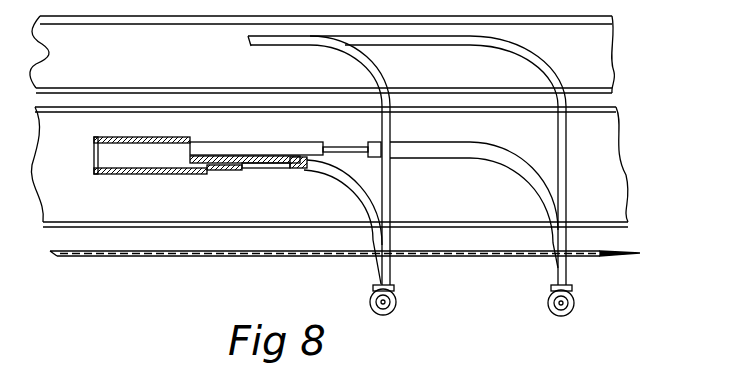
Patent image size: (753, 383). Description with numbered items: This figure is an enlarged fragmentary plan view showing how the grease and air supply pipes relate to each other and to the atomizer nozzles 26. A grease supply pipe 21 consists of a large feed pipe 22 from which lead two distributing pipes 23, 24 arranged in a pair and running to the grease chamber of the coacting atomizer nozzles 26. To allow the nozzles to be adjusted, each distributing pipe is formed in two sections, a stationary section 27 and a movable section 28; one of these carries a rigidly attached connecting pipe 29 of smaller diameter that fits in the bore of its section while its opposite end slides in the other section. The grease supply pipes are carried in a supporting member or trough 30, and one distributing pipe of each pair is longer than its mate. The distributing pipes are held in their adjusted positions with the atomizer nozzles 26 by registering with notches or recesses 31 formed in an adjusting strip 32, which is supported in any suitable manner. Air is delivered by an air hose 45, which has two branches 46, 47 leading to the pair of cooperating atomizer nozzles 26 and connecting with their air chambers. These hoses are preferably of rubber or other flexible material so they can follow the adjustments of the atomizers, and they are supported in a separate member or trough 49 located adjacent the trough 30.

The grease supply pipe 21 is at (95, 175).
The large feed pipe 22 is at (157, 165).
The distributing pipe 23 is at (238, 171).
The distributing pipe 24 is at (268, 142).
The atomizer nozzle 26 is at (396, 306).
The stationary section 27 is at (320, 142).
The movable section 28 is at (342, 184).
The connecting pipe 29 is at (258, 168).
The trough 30 is at (610, 196).
The notches 31 is at (193, 256).
The adjusting strip 32 is at (636, 255).
The air hose 45 is at (250, 44).
The branch 46 is at (383, 72).
The branch 47 is at (550, 67).
The trough 49 is at (613, 65).